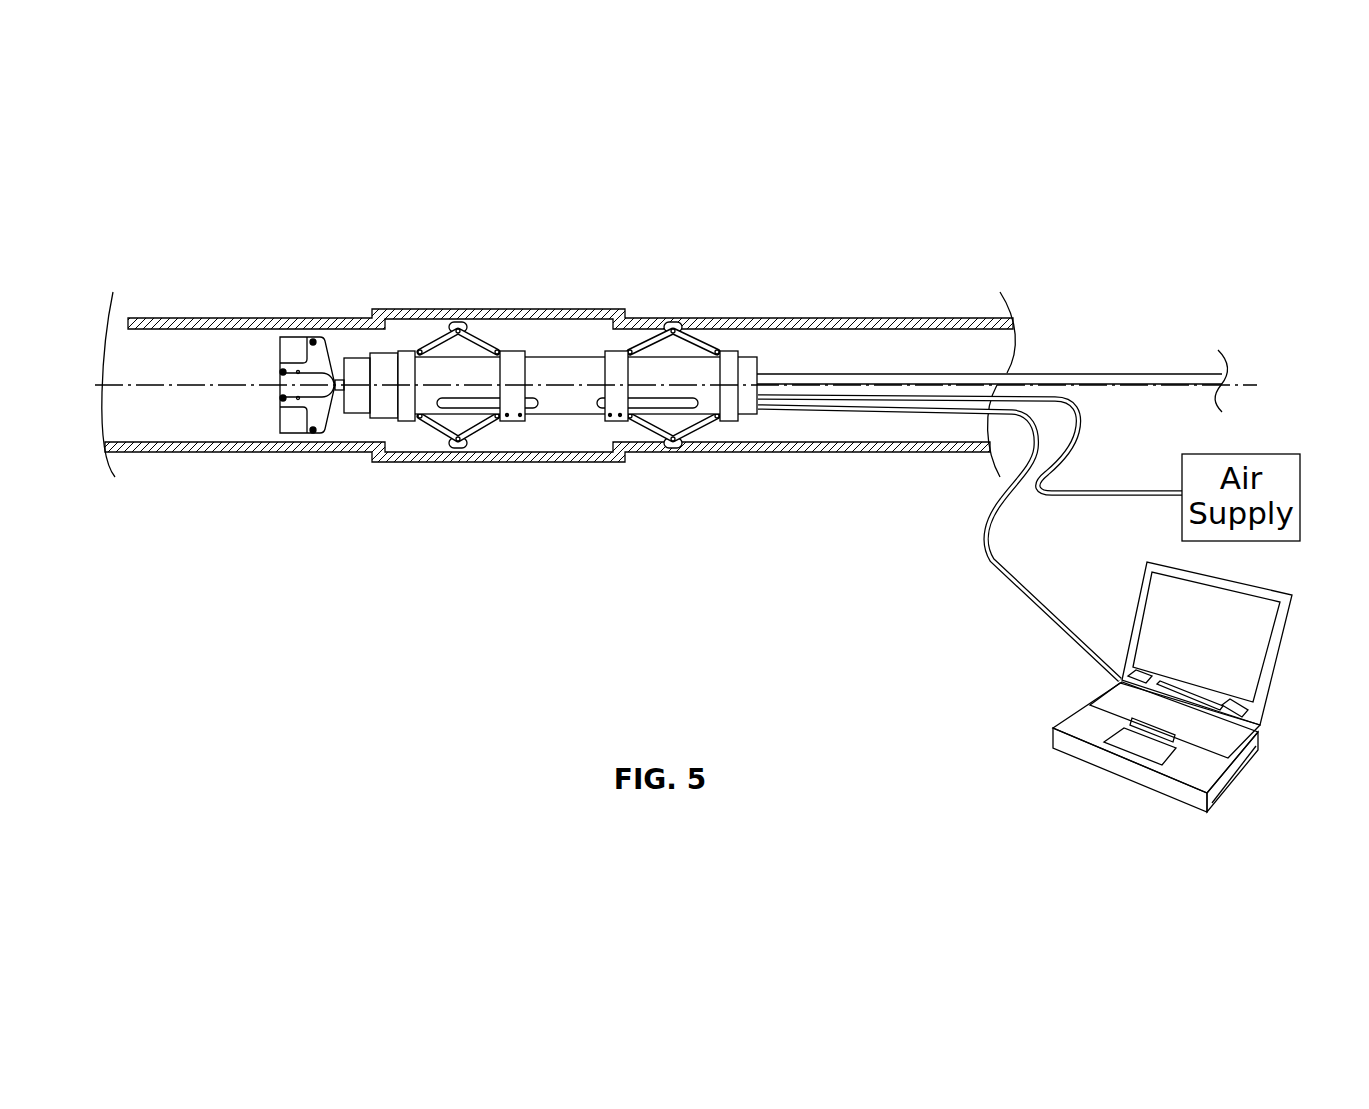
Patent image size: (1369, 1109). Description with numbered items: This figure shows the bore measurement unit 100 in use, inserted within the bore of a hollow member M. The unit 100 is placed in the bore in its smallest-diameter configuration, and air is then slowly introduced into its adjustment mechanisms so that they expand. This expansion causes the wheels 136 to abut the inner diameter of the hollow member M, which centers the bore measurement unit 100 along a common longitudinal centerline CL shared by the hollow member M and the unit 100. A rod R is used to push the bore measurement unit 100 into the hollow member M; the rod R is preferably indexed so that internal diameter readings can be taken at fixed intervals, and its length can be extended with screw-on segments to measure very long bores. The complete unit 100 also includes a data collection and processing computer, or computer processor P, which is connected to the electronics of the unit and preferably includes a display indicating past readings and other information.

The hollow member M is at (188, 320).
The longitudinal centerline CL is at (95, 385).
The bore measurement unit 100 is at (518, 391).
The wheels 136 is at (673, 442).
The rod R is at (1152, 388).
The computer processor P is at (1268, 672).